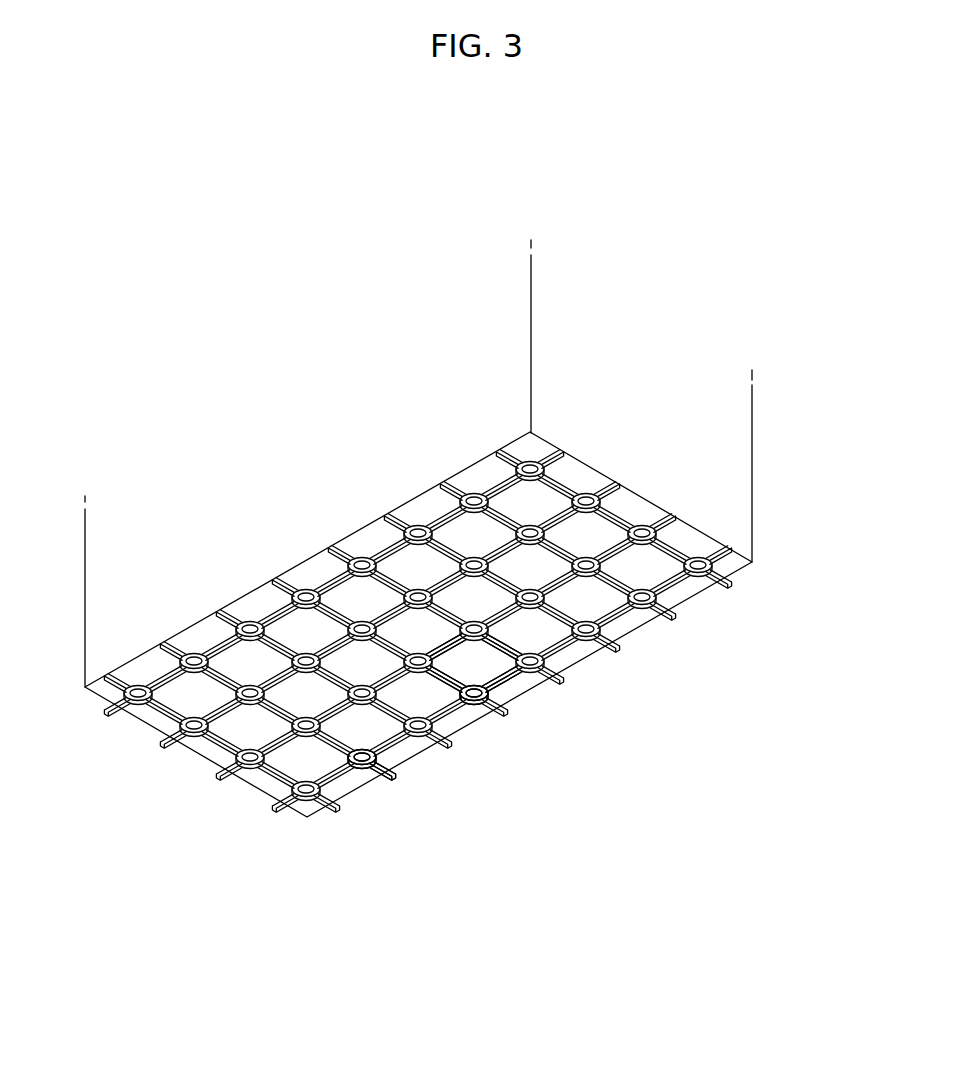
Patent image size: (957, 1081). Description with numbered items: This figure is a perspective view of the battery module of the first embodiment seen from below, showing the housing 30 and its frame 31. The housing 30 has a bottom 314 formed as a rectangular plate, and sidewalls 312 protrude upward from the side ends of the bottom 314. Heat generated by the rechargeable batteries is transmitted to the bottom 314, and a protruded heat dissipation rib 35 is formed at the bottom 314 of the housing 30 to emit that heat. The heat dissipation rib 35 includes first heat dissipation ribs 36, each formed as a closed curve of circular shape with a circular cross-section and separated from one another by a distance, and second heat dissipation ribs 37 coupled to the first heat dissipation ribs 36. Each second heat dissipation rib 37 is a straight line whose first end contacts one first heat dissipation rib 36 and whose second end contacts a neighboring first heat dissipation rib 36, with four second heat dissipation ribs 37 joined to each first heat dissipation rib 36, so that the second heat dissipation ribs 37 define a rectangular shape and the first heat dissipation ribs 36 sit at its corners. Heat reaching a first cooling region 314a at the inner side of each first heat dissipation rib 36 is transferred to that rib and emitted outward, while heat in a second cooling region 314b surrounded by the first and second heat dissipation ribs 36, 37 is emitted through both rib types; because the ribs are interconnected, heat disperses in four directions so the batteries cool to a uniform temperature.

The housing 30 is at (678, 303).
The mask frame 31 is at (756, 521).
The sidewalls 312 is at (745, 435).
The bottom 314 is at (730, 565).
The first cooling region 314a is at (474, 700).
The second cooling region 314b is at (492, 663).
The heat dissipation rib 35 is at (410, 868).
The first heat dissipation ribs 36 is at (362, 771).
The second heat dissipation ribs 37 is at (378, 778).